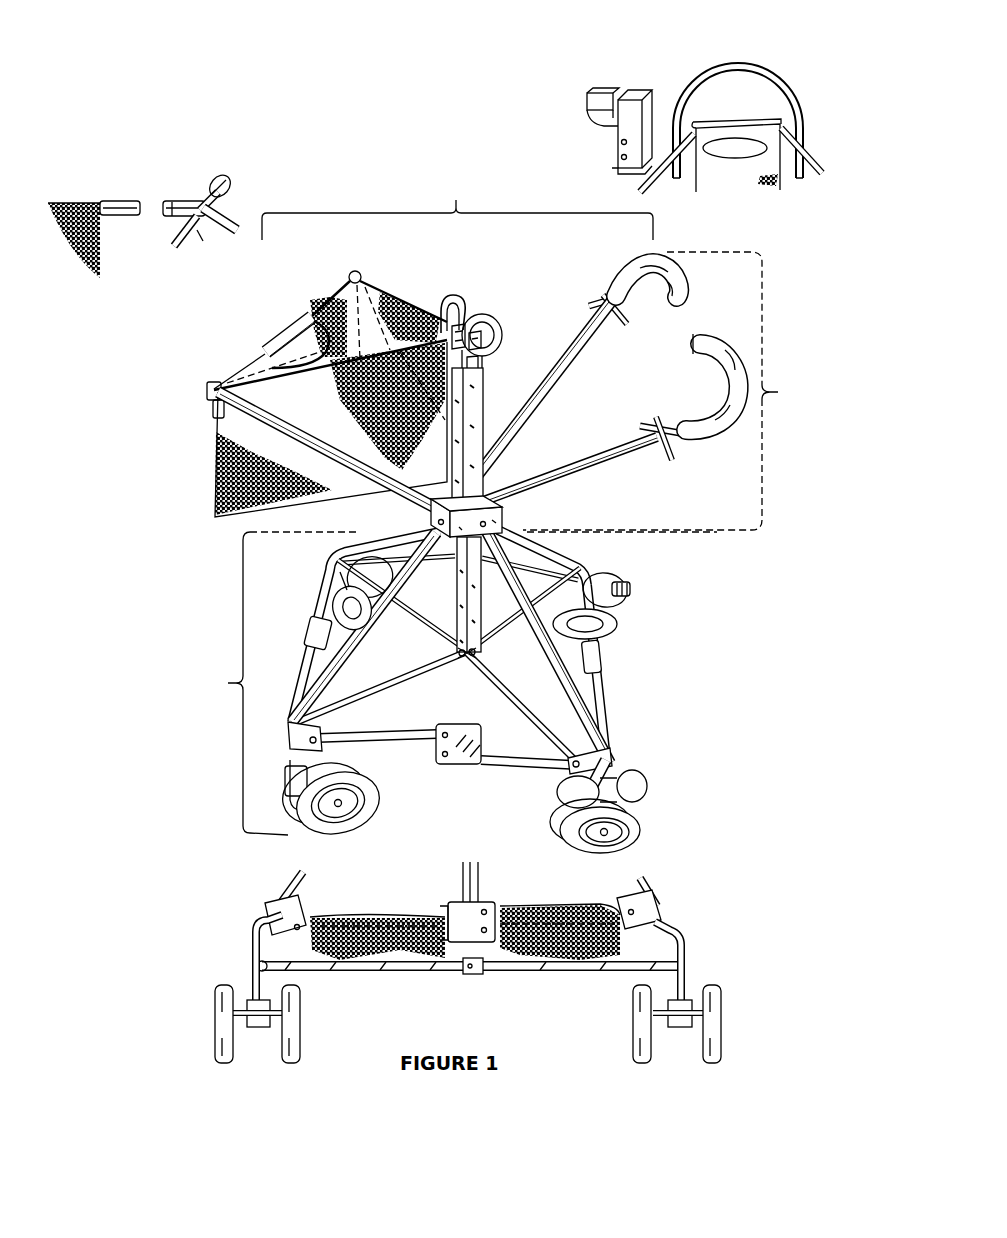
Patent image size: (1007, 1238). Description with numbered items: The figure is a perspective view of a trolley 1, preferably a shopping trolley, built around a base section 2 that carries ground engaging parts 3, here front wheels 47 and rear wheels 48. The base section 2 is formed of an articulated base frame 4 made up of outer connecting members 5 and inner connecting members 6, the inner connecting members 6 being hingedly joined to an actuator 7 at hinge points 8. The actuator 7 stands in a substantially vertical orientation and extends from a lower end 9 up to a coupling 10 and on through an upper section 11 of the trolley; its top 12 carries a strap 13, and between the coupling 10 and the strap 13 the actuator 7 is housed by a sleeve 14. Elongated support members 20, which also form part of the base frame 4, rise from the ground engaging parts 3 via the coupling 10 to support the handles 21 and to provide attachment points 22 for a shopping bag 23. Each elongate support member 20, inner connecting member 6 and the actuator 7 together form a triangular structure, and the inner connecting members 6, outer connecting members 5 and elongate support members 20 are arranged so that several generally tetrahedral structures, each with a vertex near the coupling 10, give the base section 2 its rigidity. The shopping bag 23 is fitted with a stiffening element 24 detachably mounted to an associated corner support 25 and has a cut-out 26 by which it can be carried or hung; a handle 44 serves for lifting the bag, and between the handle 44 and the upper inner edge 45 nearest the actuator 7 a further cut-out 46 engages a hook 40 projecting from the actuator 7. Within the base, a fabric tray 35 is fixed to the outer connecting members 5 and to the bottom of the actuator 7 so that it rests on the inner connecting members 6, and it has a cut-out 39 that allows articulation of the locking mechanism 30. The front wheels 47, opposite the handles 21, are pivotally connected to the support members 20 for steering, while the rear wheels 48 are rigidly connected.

The trolley 1 is at (457, 207).
The base section 2 is at (462, 683).
The ground engaging parts 3 is at (337, 617).
The articulated base frame 4 is at (470, 660).
The outer connecting members 5 is at (306, 660).
The inner connecting members 6 is at (523, 720).
The actuator 7 is at (457, 590).
The hinge points 8 is at (478, 653).
The lower end 9 is at (456, 642).
The coupling 10 is at (503, 518).
The upper section 11 is at (666, 391).
The top 12 is at (630, 108).
The strap 13 is at (492, 318).
The sleeve 14 is at (472, 409).
The elongated support members 20 is at (206, 236).
The handles 21 is at (708, 335).
The attachment points 22 is at (221, 183).
The shopping bag 23 is at (70, 258).
The stiffening element 24 is at (125, 200).
The corner support 25 is at (186, 201).
The cut-out 26 is at (280, 354).
The locking mechanism 30 is at (462, 918).
The fabric tray 35 is at (393, 978).
The cut-out 39 is at (472, 975).
The hook 40 is at (600, 120).
The handle 44 is at (803, 112).
The upper inner edge 45 is at (725, 125).
The cut-out 46 is at (745, 146).
The front wheels 47 is at (362, 820).
The rear wheels 48 is at (667, 833).